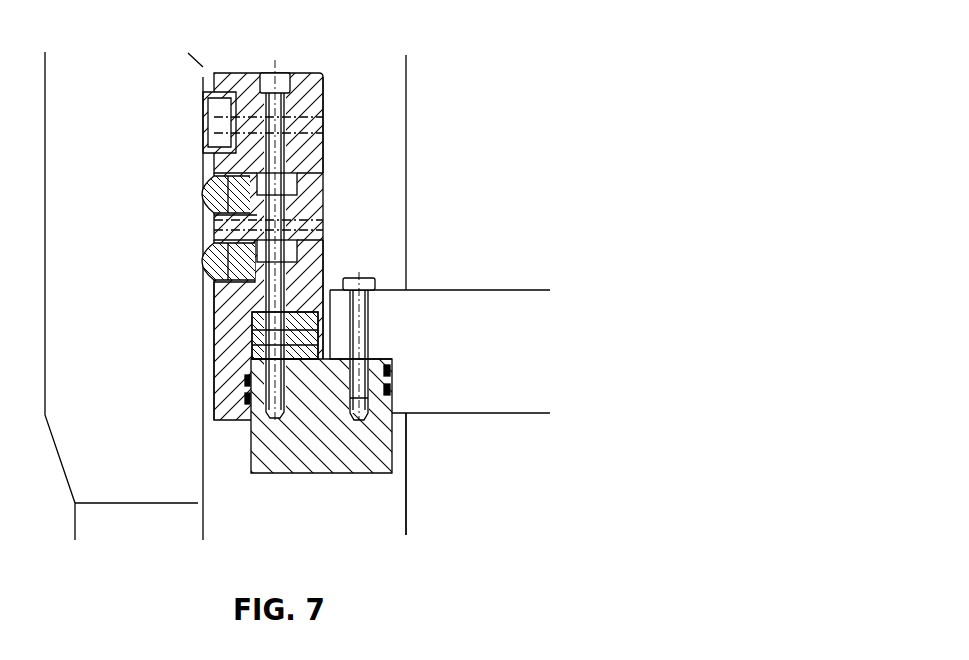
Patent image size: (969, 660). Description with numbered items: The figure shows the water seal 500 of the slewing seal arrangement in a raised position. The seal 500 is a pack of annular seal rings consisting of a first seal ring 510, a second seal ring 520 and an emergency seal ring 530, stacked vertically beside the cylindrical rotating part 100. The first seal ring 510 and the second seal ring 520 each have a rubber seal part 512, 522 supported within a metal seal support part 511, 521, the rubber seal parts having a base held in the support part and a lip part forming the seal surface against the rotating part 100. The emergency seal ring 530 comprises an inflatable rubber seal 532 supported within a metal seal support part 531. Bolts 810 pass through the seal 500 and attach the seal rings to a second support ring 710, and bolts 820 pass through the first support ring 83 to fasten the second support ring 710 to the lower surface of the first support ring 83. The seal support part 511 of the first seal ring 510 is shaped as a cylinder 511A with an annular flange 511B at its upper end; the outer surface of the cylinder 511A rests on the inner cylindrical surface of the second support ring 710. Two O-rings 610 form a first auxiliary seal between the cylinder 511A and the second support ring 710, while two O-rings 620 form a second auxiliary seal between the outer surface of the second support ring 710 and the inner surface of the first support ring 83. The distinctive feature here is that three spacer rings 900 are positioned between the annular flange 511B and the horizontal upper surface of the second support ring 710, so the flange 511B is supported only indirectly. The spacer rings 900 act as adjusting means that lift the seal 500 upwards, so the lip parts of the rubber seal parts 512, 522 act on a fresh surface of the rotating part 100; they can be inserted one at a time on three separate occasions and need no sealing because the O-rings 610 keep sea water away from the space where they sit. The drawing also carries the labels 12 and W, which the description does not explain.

The rotating part 100 is at (78, 79).
The seal 500 is at (530, 88).
The first seal ring 510 is at (208, 310).
The seal support part 511 is at (213, 350).
The cylinder 511A is at (238, 408).
The annular flange 511B is at (302, 287).
The rubber seal part 512 is at (206, 268).
The second seal ring 520 is at (332, 220).
The seal support part 521 is at (313, 203).
The rubber seal part 522 is at (206, 197).
The emergency seal ring 530 is at (340, 125).
The seal support part 531 is at (313, 81).
The inflatable rubber seal 532 is at (236, 123).
The O-rings 610 is at (240, 387).
The O-rings 620 is at (397, 385).
The second support ring 710 is at (365, 455).
The bolts 810 is at (268, 85).
The bolts 820 is at (363, 323).
The first support ring 83 is at (517, 359).
The base 12 is at (517, 479).
The spacer rings 900 is at (306, 352).
The workpiece direction W is at (235, 466).